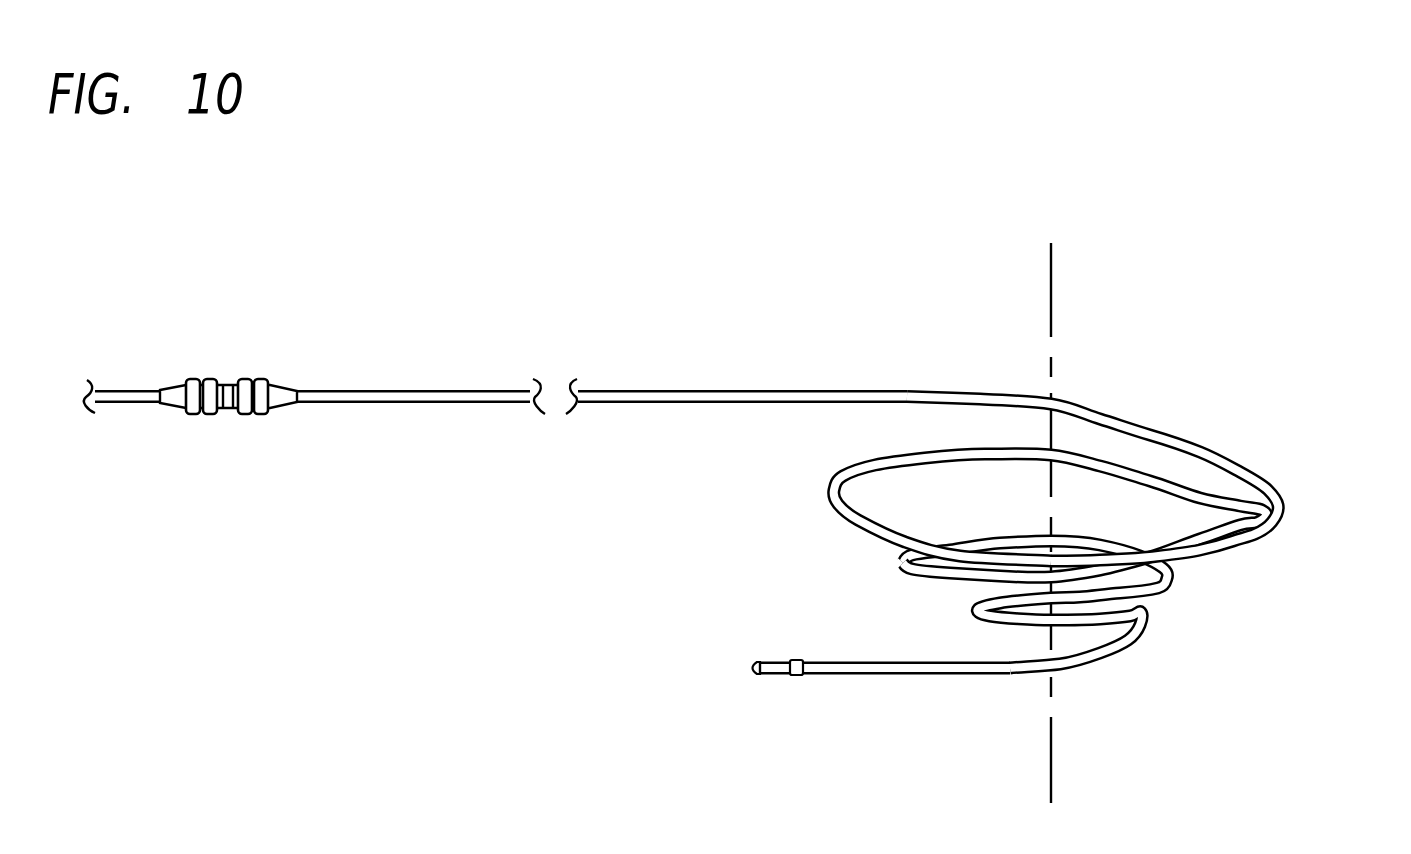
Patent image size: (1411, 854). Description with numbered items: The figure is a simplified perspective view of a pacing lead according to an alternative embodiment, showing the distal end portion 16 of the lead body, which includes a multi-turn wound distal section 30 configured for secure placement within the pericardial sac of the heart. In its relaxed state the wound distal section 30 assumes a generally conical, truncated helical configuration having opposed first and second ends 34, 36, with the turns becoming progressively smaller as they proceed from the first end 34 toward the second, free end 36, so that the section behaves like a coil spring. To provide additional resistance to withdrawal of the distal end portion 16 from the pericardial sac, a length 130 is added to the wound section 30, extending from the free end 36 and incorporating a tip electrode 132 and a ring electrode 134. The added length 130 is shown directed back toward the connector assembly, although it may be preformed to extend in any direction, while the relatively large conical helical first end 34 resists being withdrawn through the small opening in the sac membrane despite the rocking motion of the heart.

The distal end portion 16 is at (868, 338).
The wound distal section 30 is at (1025, 530).
The first end 34 is at (1102, 462).
The second end 36 is at (1027, 674).
The length 130 is at (915, 674).
The tip electrode 132 is at (748, 667).
The ring electrode 134 is at (800, 660).